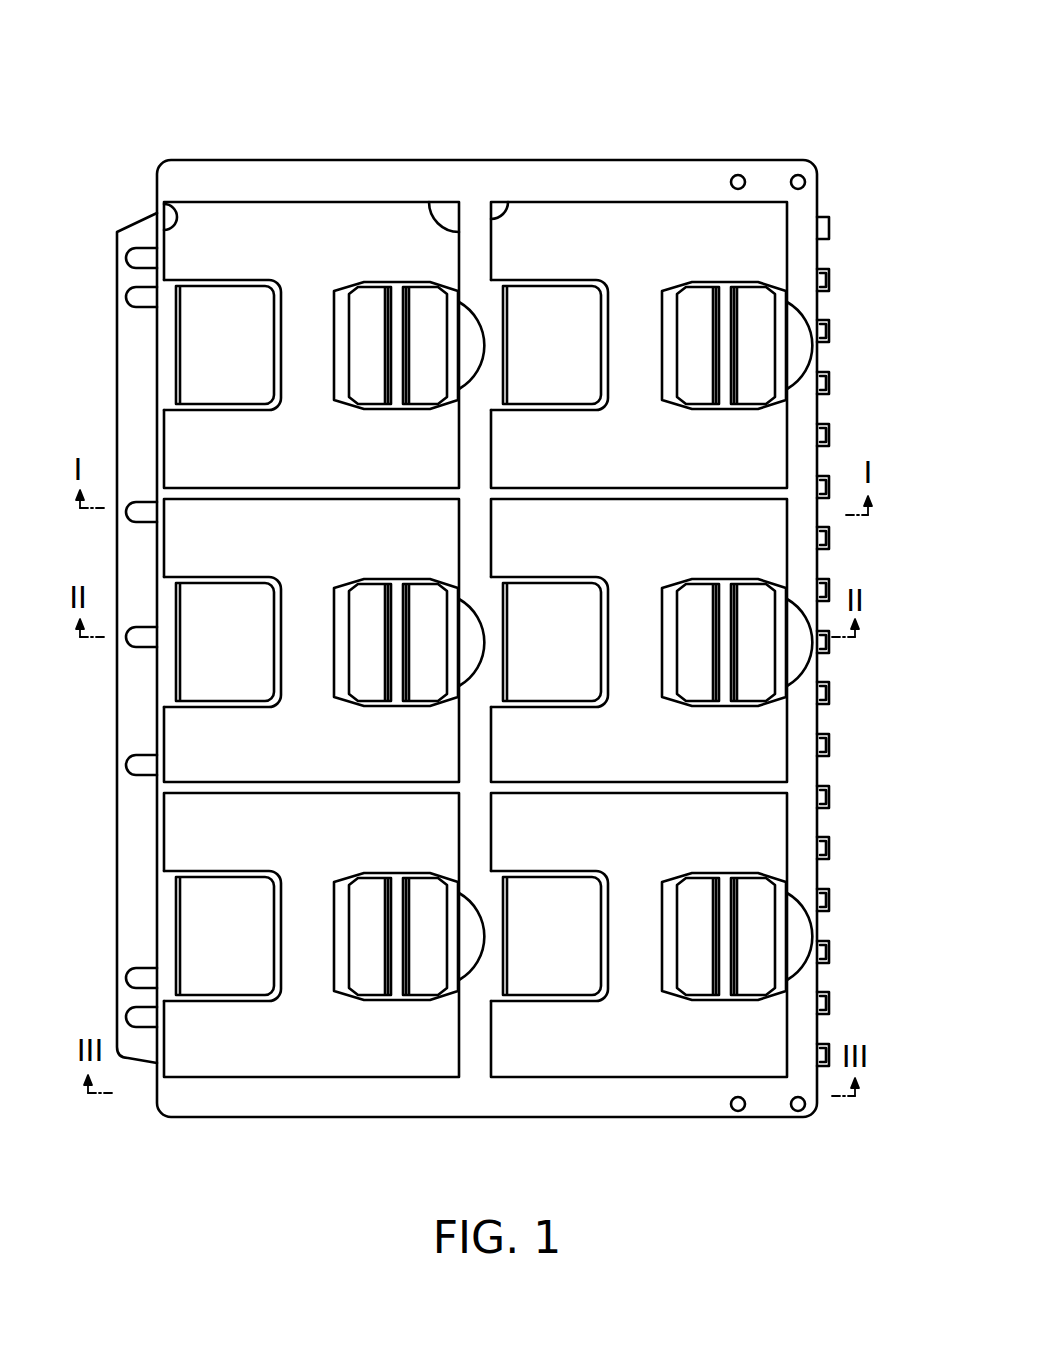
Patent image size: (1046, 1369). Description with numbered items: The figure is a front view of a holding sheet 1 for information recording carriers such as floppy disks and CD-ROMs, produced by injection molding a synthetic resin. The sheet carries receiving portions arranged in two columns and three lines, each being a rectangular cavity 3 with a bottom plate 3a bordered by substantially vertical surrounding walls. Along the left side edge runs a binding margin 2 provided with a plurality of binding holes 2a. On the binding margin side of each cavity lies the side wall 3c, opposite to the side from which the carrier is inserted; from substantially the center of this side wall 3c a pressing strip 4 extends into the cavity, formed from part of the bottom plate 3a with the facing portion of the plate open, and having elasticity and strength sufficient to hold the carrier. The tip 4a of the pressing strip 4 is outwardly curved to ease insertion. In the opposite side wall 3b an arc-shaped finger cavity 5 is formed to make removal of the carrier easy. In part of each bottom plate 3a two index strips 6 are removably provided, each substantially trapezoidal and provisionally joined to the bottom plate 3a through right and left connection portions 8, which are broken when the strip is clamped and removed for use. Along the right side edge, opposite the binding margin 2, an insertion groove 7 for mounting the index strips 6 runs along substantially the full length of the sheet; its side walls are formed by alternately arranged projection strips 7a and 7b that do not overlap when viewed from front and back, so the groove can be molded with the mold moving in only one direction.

The holding sheet 1 is at (367, 152).
The binding margin 2 is at (140, 224).
The binding holes 2a is at (140, 297).
The rectangular cavity 3 is at (327, 202).
The bottom plate 3a is at (246, 222).
The side wall 3b is at (440, 203).
The side wall 3c is at (160, 203).
The pressing strip 4 is at (208, 305).
The tip 4a is at (260, 305).
The finger cavity 5 is at (467, 337).
The index strip 6 is at (428, 410).
The insertion groove 7 is at (830, 275).
The projection strips 7a is at (830, 325).
The projection strips 7b is at (830, 228).
The connection portions 8 is at (426, 283).